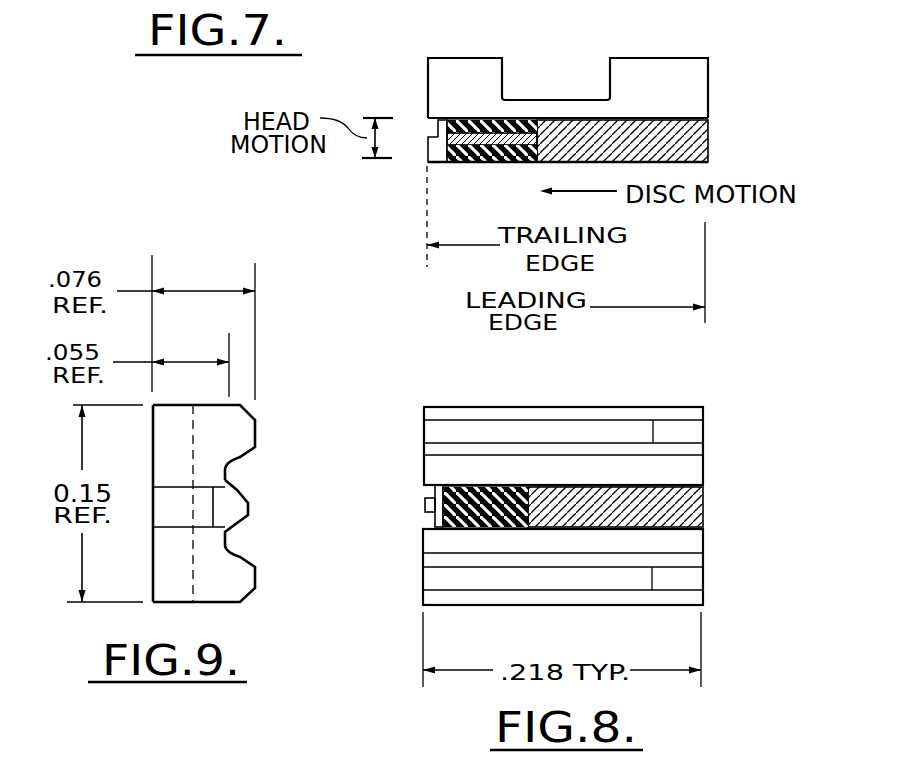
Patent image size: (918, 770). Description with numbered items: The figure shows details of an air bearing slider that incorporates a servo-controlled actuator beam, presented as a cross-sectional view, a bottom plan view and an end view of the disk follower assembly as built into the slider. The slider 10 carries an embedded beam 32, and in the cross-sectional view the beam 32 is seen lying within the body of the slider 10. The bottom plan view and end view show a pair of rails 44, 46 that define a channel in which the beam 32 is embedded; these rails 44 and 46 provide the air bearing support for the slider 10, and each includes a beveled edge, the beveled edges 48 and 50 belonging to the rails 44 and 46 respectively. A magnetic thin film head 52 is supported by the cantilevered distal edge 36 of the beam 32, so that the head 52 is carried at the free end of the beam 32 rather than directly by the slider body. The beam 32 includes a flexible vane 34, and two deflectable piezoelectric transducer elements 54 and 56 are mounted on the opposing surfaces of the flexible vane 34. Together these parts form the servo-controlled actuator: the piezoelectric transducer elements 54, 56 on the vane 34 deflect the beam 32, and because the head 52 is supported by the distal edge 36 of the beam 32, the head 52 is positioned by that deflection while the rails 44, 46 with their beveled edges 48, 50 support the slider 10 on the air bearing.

In FIG. 7, the slider 10 is at (465, 63).
In FIG. 7, the beam 32 is at (697, 143).
In FIG. 8, the beam 32 is at (697, 507).
In FIG. 7, the flexible vane 34 is at (520, 120).
In FIG. 7, the cantilevered distal edge 36 is at (440, 125).
In FIG. 8, the cantilevered distal edge 36 is at (440, 520).
In FIG. 8, the rail 44 is at (553, 430).
In FIG. 9, the rail 44 is at (257, 428).
In FIG. 8, the rail 46 is at (553, 580).
In FIG. 9, the rail 46 is at (248, 572).
In FIG. 8, the beveled edge 48 is at (690, 432).
In FIG. 8, the beveled edge 50 is at (687, 580).
In FIG. 7, the magnetic thin film head 52 is at (428, 147).
In FIG. 8, the magnetic thin film head 52 is at (422, 497).
In FIG. 7, the piezoelectric transducer element 54 is at (462, 120).
In FIG. 7, the piezoelectric transducer element 56 is at (475, 163).
In FIG. 8, the piezoelectric transducer element 56 is at (452, 527).